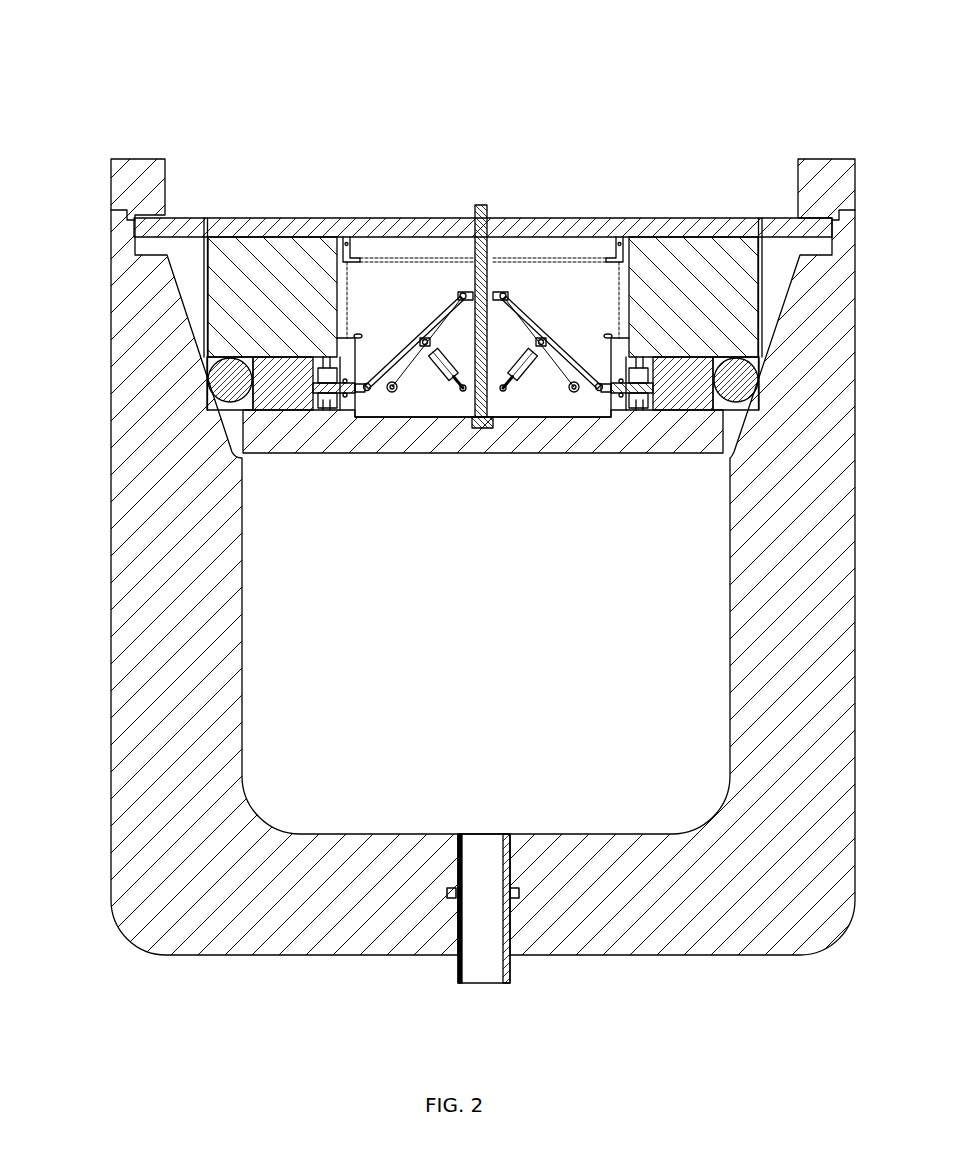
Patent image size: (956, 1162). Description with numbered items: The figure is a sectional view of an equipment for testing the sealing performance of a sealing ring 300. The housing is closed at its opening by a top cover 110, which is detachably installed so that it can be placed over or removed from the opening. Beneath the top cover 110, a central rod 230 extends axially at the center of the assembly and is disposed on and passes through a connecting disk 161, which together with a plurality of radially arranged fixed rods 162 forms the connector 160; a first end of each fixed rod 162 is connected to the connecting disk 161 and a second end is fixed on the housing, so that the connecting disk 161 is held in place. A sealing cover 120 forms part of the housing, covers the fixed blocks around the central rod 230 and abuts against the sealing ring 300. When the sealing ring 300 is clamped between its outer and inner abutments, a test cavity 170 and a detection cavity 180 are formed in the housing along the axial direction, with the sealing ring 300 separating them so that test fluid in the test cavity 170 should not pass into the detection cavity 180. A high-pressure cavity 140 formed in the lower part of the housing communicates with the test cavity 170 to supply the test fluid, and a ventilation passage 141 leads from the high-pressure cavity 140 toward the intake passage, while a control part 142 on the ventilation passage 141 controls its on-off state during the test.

The top cover 110 is at (606, 228).
The sealing cover 120 is at (735, 272).
The high-pressure cavity 140 is at (337, 807).
The ventilation passage 141 is at (493, 955).
The control part 142 is at (449, 898).
The connector 160 is at (368, 200).
The connecting disk 161 is at (467, 237).
The fixed rod 162 is at (376, 258).
The test cavity 170 is at (240, 424).
The detection cavity 180 is at (215, 358).
The central rod 230 is at (491, 205).
The sealing ring 300 is at (226, 380).